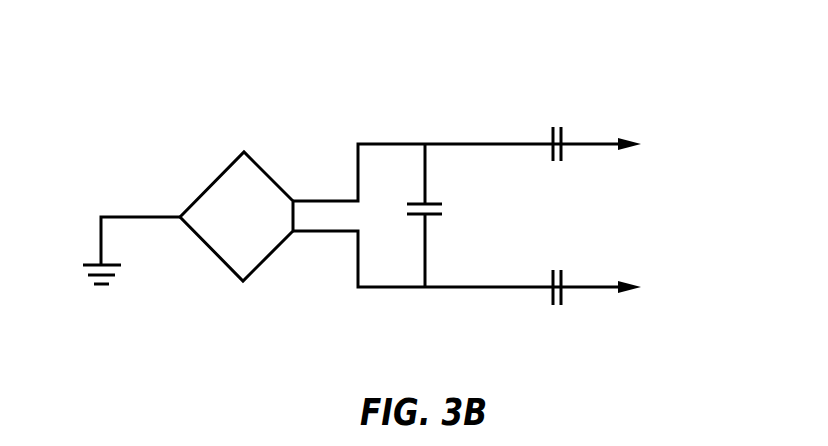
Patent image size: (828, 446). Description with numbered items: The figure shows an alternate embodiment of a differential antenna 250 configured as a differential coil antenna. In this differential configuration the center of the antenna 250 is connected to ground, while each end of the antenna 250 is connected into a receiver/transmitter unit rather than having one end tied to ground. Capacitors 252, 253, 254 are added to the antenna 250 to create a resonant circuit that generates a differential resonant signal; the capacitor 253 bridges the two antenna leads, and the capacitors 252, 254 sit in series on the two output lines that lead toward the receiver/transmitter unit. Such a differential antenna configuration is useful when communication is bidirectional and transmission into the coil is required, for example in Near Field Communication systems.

The differential antenna 250 is at (213, 184).
The capacitor 252 is at (563, 137).
The capacitor 253 is at (433, 216).
The capacitor 254 is at (563, 280).